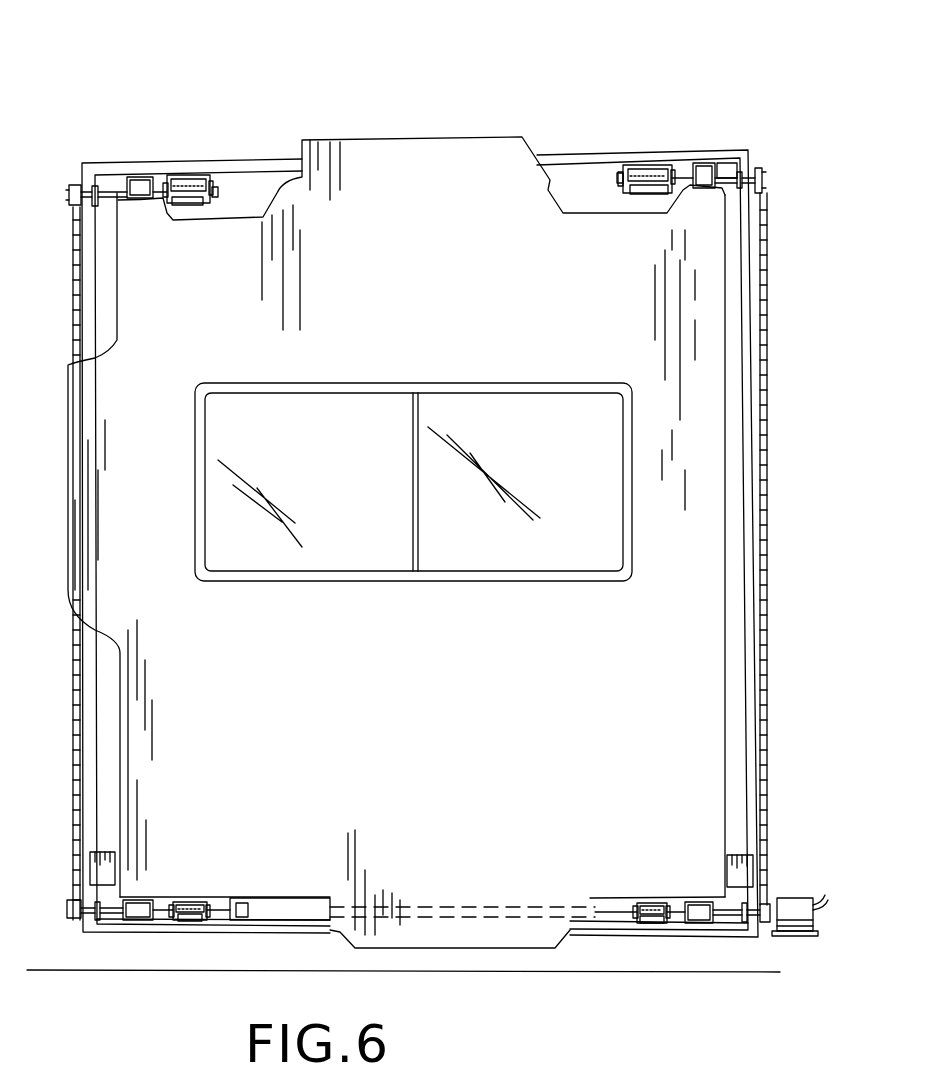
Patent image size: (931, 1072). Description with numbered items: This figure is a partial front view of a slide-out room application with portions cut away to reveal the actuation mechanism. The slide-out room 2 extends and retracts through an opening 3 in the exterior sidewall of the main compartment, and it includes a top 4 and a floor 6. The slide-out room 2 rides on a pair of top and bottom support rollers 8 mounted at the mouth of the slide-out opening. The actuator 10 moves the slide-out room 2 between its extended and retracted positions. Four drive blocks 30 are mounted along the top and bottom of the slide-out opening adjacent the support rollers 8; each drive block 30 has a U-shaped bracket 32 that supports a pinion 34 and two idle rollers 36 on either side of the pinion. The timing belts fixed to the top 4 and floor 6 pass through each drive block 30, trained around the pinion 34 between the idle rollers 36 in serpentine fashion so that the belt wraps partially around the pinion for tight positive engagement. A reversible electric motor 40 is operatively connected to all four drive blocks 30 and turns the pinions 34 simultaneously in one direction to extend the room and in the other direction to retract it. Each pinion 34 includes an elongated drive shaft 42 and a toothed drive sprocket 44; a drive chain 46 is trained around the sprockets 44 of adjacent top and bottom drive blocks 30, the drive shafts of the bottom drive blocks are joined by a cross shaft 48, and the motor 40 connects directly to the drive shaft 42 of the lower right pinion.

The slide-out room 2 is at (703, 598).
The opening 3 is at (108, 345).
The top 4 is at (270, 165).
The floor 6 is at (263, 895).
The support rollers 8 is at (140, 185).
The actuator 10 is at (575, 135).
The drive blocks 30 is at (188, 150).
The U-shaped bracket 32 is at (210, 198).
The pinion 34 is at (190, 180).
The idle rollers 36 is at (185, 205).
The reversible electric motor 40 is at (795, 900).
The drive shaft 42 is at (100, 200).
The drive sprocket 44 is at (75, 190).
The drive chain 46 is at (76, 665).
The cross shaft 48 is at (298, 895).